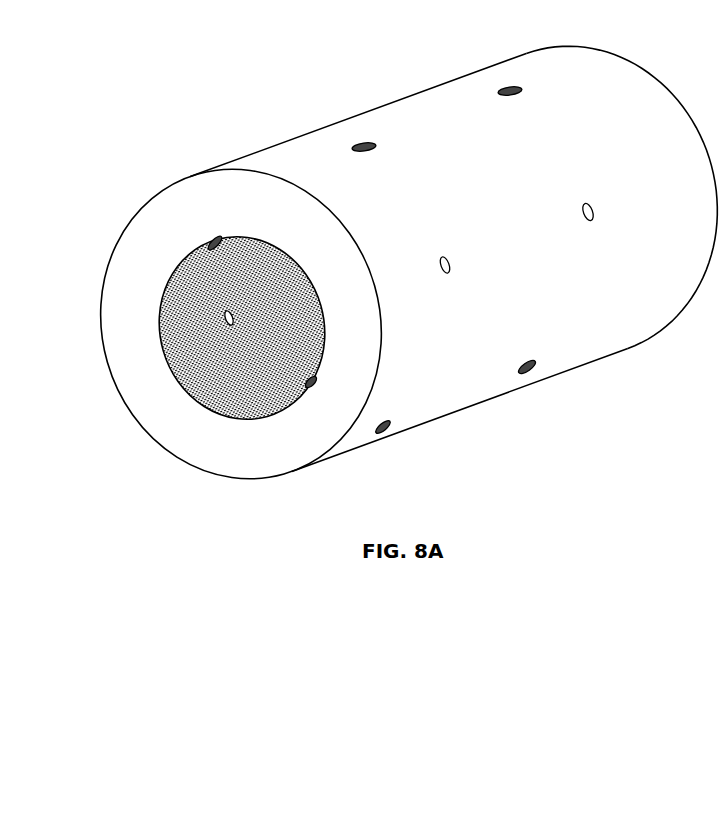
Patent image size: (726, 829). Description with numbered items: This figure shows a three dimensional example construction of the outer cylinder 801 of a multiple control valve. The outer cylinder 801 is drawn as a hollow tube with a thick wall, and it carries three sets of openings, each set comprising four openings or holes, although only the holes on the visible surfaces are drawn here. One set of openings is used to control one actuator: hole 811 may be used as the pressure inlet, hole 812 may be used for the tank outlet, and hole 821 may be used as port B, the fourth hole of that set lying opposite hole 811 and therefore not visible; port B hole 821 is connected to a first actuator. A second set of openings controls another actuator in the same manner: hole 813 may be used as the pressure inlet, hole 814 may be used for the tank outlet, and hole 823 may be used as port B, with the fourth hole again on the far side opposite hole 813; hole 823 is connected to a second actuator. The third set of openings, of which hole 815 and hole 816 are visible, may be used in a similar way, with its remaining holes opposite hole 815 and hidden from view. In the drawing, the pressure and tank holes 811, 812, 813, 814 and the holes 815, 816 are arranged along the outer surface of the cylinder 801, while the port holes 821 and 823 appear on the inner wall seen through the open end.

The ablation probe / cylindrical device 801 is at (246, 128).
The hole 811 is at (592, 203).
The hole 812 is at (449, 257).
The hole 813 is at (521, 88).
The hole 814 is at (375, 143).
The hole 815 is at (211, 238).
The hole 816 is at (392, 418).
The hole 821 is at (233, 310).
The hole 823 is at (304, 374).